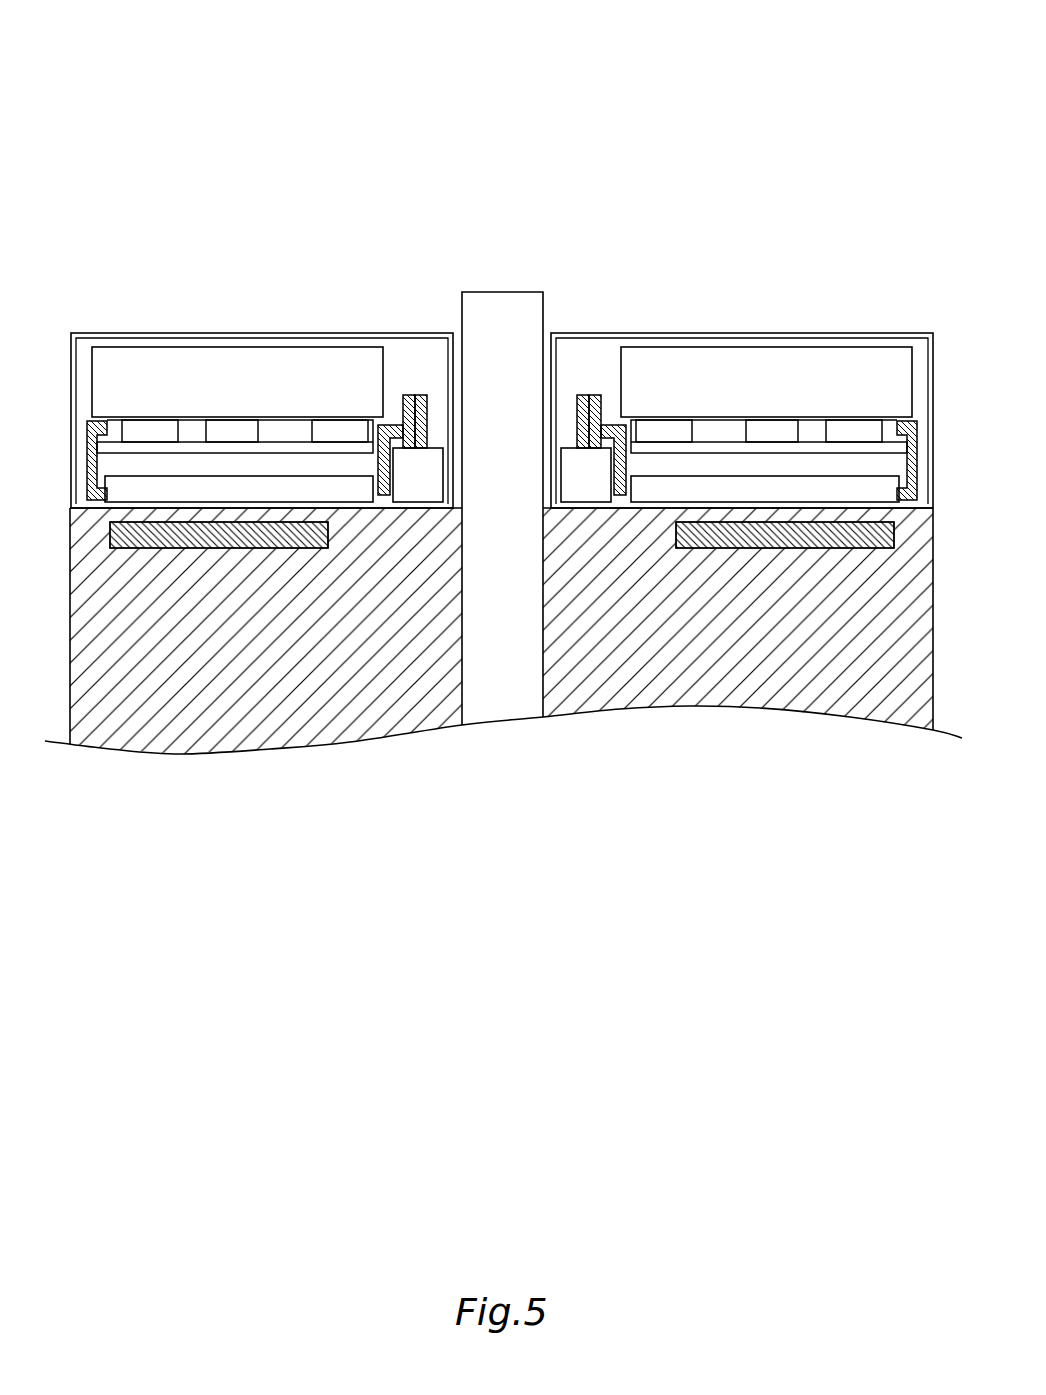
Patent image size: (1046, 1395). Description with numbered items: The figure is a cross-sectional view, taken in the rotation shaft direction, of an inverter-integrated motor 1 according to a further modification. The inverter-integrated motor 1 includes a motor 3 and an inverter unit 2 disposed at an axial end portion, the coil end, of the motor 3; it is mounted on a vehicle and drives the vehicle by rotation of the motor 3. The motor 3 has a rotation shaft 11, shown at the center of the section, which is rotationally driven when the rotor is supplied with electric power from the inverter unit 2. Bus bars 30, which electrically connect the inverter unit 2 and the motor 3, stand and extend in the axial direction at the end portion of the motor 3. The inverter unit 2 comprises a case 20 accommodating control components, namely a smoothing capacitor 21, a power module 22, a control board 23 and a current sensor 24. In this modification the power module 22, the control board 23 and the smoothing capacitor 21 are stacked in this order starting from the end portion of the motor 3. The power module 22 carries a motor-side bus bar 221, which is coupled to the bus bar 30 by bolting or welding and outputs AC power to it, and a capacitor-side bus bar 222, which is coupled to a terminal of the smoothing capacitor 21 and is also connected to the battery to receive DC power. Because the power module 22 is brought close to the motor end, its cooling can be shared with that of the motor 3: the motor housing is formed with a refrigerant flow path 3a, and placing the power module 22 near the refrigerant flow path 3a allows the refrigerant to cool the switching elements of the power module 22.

The inverter-integrated motor 1 is at (706, 130).
The inverter unit 2 is at (328, 205).
The motor 3 is at (690, 670).
The refrigerant flow path 3a is at (162, 550).
The rotation shaft 11 is at (502, 677).
The case 20 is at (95, 332).
The smoothing capacitor 21 is at (157, 368).
The power module 22 is at (228, 488).
The control board 23 is at (294, 445).
The current sensor 24 is at (395, 425).
The bus bar 30 is at (420, 395).
The motor-side bus bar 221 is at (405, 395).
The capacitor-side bus bar 222 is at (87, 440).